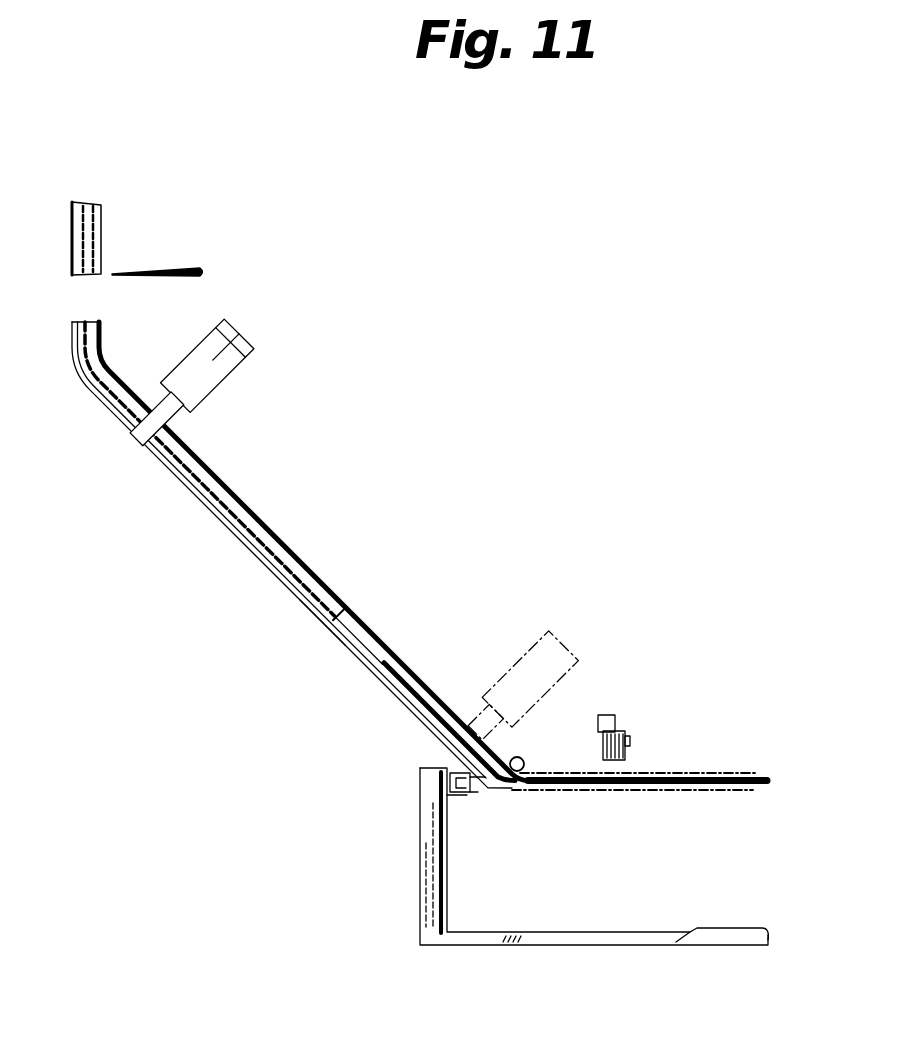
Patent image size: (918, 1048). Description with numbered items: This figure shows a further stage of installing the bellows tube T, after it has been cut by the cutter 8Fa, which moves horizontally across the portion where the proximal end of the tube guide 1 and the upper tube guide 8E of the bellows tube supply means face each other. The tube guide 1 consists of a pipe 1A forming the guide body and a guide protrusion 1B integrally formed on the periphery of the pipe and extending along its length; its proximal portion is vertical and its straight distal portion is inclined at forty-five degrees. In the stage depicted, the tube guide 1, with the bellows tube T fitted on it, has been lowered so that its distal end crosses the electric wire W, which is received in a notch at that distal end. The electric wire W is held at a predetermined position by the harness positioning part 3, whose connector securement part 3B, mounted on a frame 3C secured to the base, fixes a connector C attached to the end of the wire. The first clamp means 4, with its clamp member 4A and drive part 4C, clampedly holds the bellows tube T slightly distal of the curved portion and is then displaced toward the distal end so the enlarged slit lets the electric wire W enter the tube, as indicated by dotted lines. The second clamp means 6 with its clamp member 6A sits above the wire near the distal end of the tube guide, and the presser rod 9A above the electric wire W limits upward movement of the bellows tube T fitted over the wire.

The tube guide 1 is at (268, 527).
The pipe 1A is at (370, 637).
The guide protrusion 1B is at (349, 642).
The bellows tube T is at (310, 577).
The electric wire W is at (743, 778).
The harness positioning part 3 is at (622, 947).
The connector securement part 3B is at (450, 782).
The frame 3C is at (672, 940).
The first clamp means 4 is at (251, 327).
The clamp member 4A is at (183, 416).
The drive part 4C is at (242, 366).
The second clamp means 6 is at (614, 712).
The clamp member 6A is at (630, 752).
The tube guide 8E is at (103, 212).
The cutter 8Fa is at (183, 272).
The presser rod 9A is at (523, 760).
The connector C is at (472, 792).